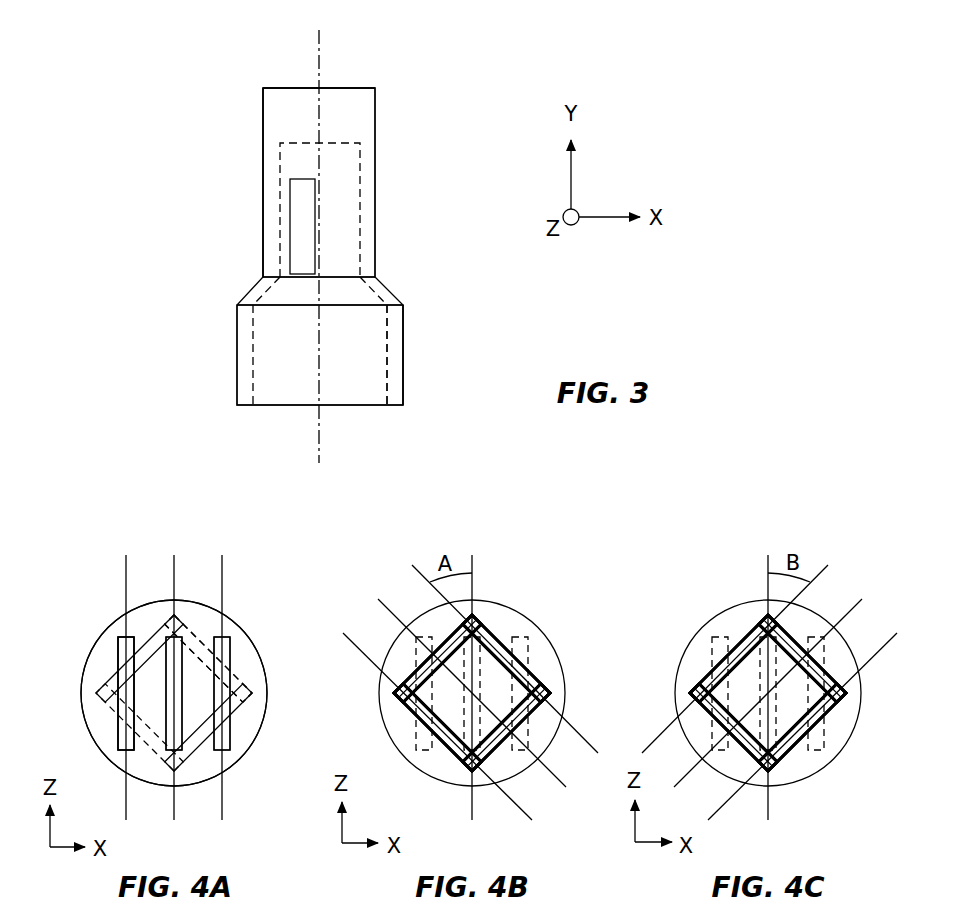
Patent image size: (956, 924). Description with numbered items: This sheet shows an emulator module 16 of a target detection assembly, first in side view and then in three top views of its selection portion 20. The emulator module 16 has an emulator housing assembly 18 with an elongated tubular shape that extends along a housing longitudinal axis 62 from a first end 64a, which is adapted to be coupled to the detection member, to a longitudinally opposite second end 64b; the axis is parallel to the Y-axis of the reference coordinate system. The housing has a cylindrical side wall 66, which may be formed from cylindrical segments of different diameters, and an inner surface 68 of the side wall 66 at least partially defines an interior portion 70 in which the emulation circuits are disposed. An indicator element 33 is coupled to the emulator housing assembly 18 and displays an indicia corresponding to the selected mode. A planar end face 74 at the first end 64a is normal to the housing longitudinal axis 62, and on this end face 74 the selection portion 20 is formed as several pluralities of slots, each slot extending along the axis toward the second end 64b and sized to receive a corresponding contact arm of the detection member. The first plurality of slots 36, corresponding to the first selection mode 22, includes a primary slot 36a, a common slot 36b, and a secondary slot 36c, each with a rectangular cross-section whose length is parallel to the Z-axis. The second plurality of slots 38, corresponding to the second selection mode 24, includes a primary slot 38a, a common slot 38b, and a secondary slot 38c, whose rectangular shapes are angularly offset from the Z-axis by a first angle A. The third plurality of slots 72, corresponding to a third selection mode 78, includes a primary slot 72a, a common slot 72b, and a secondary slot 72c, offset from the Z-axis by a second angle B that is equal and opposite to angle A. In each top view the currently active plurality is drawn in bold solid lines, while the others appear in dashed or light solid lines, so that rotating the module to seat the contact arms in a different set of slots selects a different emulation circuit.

In FIG. 3, the emulator module 16 is at (412, 75).
In FIG. 3, the emulator housing assembly 18 is at (375, 160).
In FIG. 4A, the emulator housing assembly 18 is at (245, 628).
In FIG. 3, the selection portion 20 is at (268, 68).
In FIG. 4A, the selection portion 20 is at (232, 577).
In FIG. 4B, the selection portion 20 is at (402, 577).
In FIG. 4C, the selection portion 20 is at (698, 577).
In FIG. 4A, the first selection mode 22 is at (105, 577).
In FIG. 4B, the second selection mode 24 is at (530, 578).
In FIG. 3, the indicator element 33 is at (302, 218).
In FIG. 4A, the first plurality of slots 36 is at (110, 660).
In FIG. 4B, the first plurality of slots 36 is at (474, 662).
In FIG. 4C, the first plurality of slots 36 is at (760, 740).
In FIG. 4A, the primary slot 36a is at (162, 656).
In FIG. 4A, the common slot 36b is at (232, 656).
In FIG. 4A, the secondary slot 36c is at (118, 681).
In FIG. 4A, the second plurality of slots 38 is at (110, 712).
In FIG. 4B, the second plurality of slots 38 is at (440, 750).
In FIG. 4C, the second plurality of slots 38 is at (740, 688).
In FIG. 4B, the primary slot 38a is at (492, 735).
In FIG. 4B, the common slot 38b is at (527, 683).
In FIG. 4B, the secondary slot 38c is at (455, 763).
In FIG. 3, the housing longitudinal axis 62 is at (320, 53).
In FIG. 3, the first end 64a is at (263, 107).
In FIG. 3, the second end 64b is at (403, 393).
In FIG. 3, the side wall 66 is at (375, 223).
In FIG. 3, the inner surface 68 is at (388, 364).
In FIG. 3, the interior portion 70 is at (285, 387).
In FIG. 4A, the third plurality of slots 72 is at (193, 667).
In FIG. 4B, the third plurality of slots 72 is at (537, 713).
In FIG. 4C, the third plurality of slots 72 is at (830, 657).
In FIG. 4C, the primary slot 72a is at (722, 763).
In FIG. 4C, the common slot 72b is at (817, 713).
In FIG. 4C, the secondary slot 72c is at (708, 675).
In FIG. 3, the end face 74 is at (345, 88).
In FIG. 4A, the end face 74 is at (113, 638).
In FIG. 4C, the third selection mode 78 is at (843, 580).